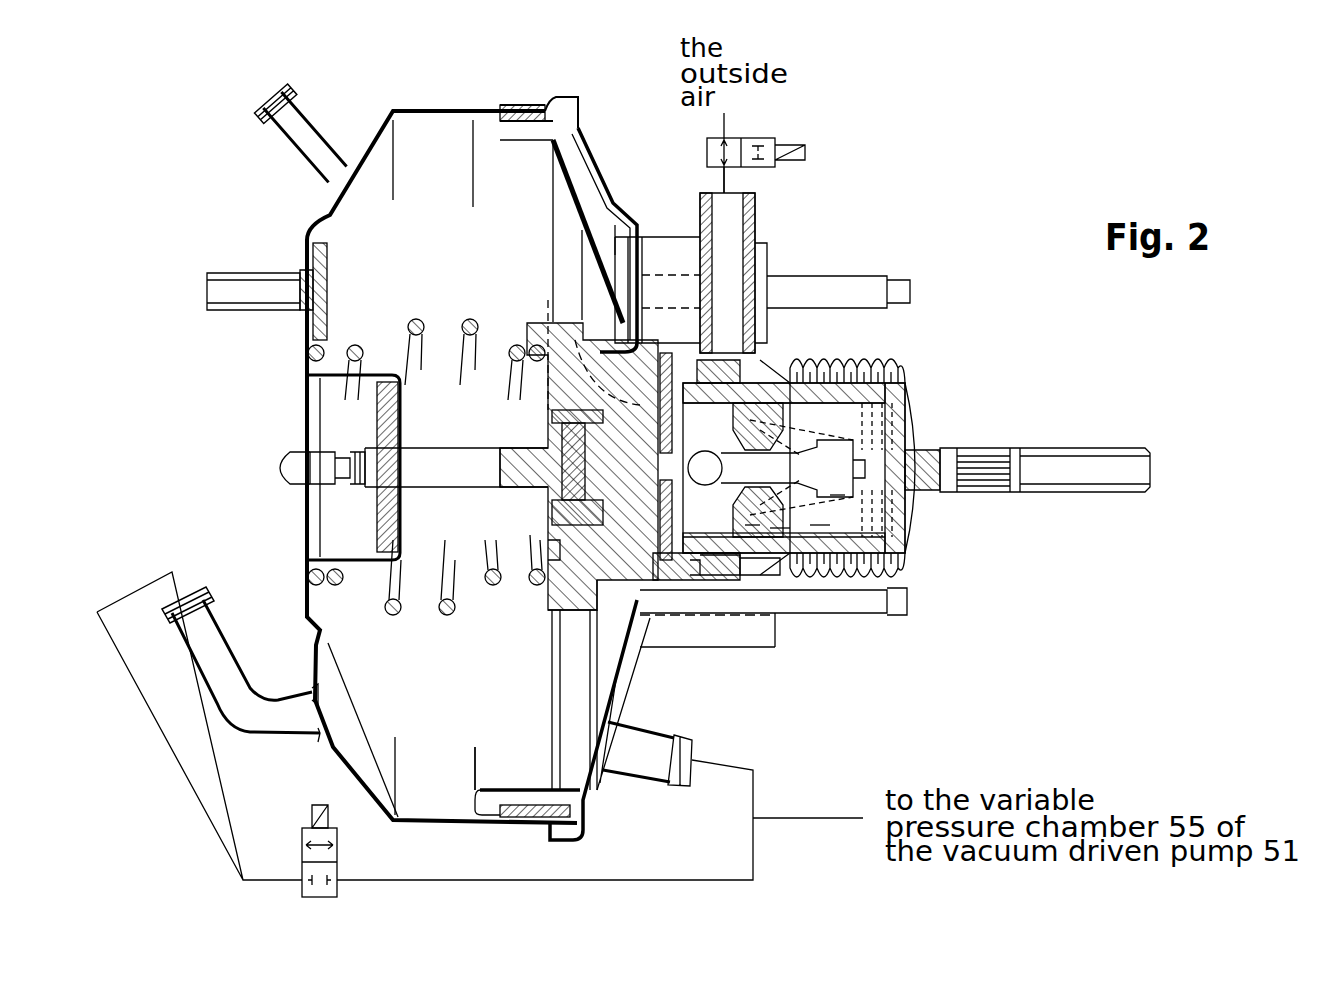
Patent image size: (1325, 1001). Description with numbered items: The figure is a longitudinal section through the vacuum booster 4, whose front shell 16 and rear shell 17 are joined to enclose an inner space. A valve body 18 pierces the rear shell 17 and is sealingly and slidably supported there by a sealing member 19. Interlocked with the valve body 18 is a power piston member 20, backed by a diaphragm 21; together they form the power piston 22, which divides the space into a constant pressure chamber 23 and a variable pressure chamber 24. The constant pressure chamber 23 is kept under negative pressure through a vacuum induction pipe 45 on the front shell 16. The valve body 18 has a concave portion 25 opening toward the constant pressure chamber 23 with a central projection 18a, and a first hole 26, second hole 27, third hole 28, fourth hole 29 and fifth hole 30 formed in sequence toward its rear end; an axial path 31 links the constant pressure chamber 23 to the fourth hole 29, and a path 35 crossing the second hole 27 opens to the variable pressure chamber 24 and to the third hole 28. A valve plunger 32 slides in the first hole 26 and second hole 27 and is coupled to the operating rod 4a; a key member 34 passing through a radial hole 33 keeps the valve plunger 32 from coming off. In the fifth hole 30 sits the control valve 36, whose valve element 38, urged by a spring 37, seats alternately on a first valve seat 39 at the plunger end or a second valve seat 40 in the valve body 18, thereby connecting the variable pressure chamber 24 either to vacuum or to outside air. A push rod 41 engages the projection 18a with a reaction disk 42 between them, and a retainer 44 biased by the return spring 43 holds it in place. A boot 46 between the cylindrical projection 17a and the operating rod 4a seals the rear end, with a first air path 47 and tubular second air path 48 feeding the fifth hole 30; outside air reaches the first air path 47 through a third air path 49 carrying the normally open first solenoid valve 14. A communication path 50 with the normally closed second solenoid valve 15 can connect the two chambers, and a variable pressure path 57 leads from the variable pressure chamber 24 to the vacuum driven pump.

The vacuum booster 4 is at (636, 112).
The operating rod 4a is at (990, 452).
The first solenoid valve 14 is at (770, 137).
The second solenoid valve 15 is at (302, 830).
The front shell 16 is at (447, 111).
The rear shell 17 is at (615, 200).
The cylindrical projection 17a is at (780, 620).
The valve body 18 is at (532, 325).
The projection 18a is at (535, 570).
The sealing member 19 is at (672, 570).
The power piston member 20 is at (575, 670).
The diaphragm 21 is at (503, 756).
The power piston 22 is at (522, 742).
The constant pressure chamber 23 is at (444, 252).
The variable pressure chamber 24 is at (614, 226).
The concave portion 25 is at (570, 580).
The first hole 26 is at (583, 612).
The second hole 27 is at (772, 366).
The third hole 28 is at (760, 575).
The fourth hole 29 is at (812, 365).
The fifth hole 30 is at (907, 392).
The path 31 is at (578, 340).
The valve plunger 32 is at (590, 500).
The hole 33 is at (718, 575).
The key member 34 is at (700, 575).
The path 35 is at (750, 575).
The control valve 36 is at (880, 656).
The spring 37 is at (850, 520).
The valve element 38 is at (838, 540).
The first valve seat 39 is at (810, 535).
The second valve seat 40 is at (785, 540).
The push rod 41 is at (430, 460).
The reaction disk 42 is at (552, 420).
The return spring 43 is at (442, 607).
The retainer 44 is at (548, 395).
The vacuum induction pipe 45 is at (285, 150).
The boot 46 is at (910, 530).
The first air path 47 is at (740, 240).
The second air path 48 is at (872, 365).
The third air path 49 is at (727, 178).
The communication path 50 is at (485, 880).
The variable pressure path 57 is at (815, 817).